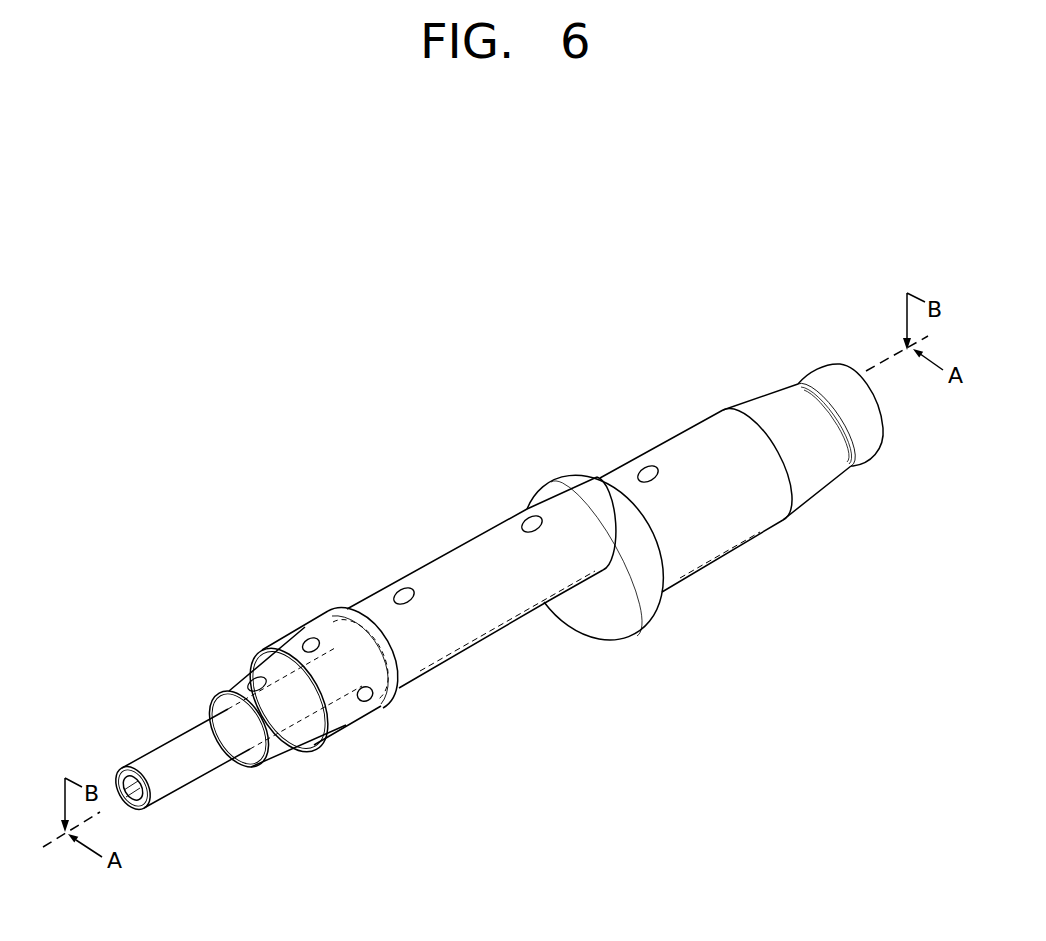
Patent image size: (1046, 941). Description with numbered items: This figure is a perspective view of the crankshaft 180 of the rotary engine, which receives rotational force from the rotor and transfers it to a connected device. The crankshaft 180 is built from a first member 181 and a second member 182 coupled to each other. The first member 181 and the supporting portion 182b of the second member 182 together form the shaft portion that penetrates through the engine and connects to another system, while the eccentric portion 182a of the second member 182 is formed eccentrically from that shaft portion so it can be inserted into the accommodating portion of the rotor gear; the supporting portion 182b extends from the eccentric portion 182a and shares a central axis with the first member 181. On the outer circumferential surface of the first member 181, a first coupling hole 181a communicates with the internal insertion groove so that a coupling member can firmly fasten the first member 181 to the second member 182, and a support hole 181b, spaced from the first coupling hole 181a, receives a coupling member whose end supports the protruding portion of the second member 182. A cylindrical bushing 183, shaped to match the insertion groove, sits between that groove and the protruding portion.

The crankshaft 180 is at (146, 577).
The first member 181 is at (183, 740).
The first coupling hole 181a is at (370, 698).
The support hole 181b is at (308, 636).
The second member 182 is at (597, 356).
The eccentric portion 182a is at (502, 532).
The supporting portion 182b is at (660, 457).
The bushing 183 is at (340, 610).